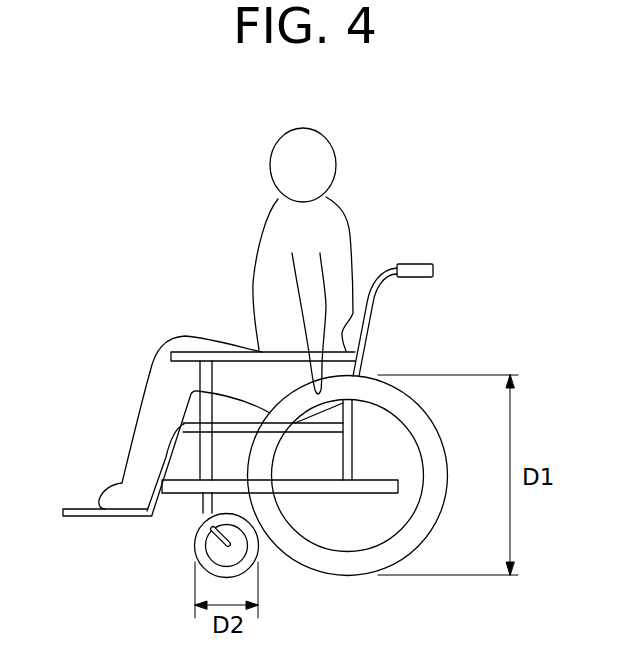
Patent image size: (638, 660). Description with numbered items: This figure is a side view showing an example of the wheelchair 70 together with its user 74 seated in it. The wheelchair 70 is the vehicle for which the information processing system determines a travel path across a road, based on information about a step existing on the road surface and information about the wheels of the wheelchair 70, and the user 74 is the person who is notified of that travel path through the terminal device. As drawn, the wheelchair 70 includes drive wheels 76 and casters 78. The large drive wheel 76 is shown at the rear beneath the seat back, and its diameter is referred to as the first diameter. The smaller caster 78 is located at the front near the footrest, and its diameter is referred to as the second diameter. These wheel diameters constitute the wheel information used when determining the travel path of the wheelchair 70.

The wheelchair 70 is at (368, 312).
The user 74 is at (317, 130).
The drive wheel 76 is at (324, 558).
The caster 78 is at (195, 543).